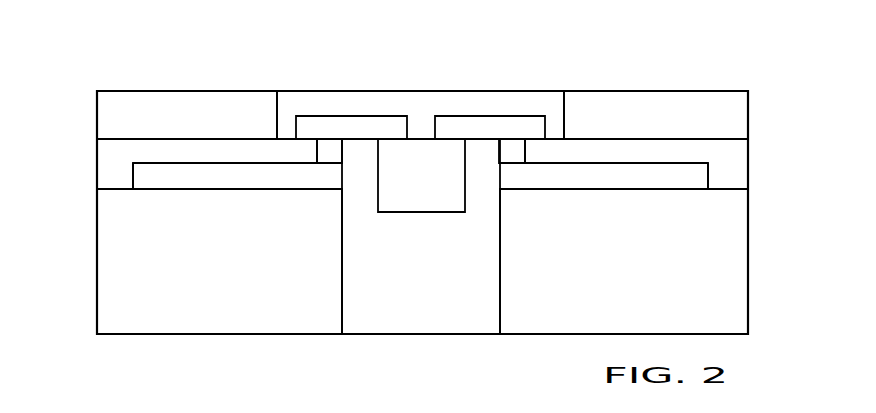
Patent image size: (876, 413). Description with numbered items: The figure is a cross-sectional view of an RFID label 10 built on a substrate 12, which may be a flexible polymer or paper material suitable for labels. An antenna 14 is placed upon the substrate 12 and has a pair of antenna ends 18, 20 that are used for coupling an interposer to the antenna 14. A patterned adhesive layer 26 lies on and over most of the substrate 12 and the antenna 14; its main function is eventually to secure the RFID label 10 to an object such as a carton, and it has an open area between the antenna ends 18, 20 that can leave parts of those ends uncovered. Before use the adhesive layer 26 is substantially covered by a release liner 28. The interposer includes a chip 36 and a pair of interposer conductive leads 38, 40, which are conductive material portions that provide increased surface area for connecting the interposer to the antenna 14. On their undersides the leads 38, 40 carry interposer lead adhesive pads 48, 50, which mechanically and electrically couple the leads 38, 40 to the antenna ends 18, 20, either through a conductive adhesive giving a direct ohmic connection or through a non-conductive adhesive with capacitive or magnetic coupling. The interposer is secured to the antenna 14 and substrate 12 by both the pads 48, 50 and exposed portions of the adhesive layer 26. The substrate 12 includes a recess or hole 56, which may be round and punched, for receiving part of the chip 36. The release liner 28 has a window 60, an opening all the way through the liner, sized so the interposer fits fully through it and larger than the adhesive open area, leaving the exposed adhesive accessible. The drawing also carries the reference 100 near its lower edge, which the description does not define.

The RFID label 10 is at (84, 52).
The substrate 12 is at (713, 289).
The antenna 14 is at (697, 176).
The antenna end 18 is at (325, 180).
The antenna end 20 is at (518, 178).
The patterned adhesive layer 26 is at (110, 162).
The release liner 28 is at (110, 108).
The chip 36 is at (420, 178).
The interposer conductive lead 38 is at (307, 123).
The interposer conductive lead 40 is at (547, 123).
The interposer lead adhesive pad 48 is at (325, 152).
The interposer lead adhesive pad 50 is at (507, 150).
The recess or hole 56 is at (412, 350).
The window 60 is at (558, 66).
The transistor structure 100 is at (76, 408).